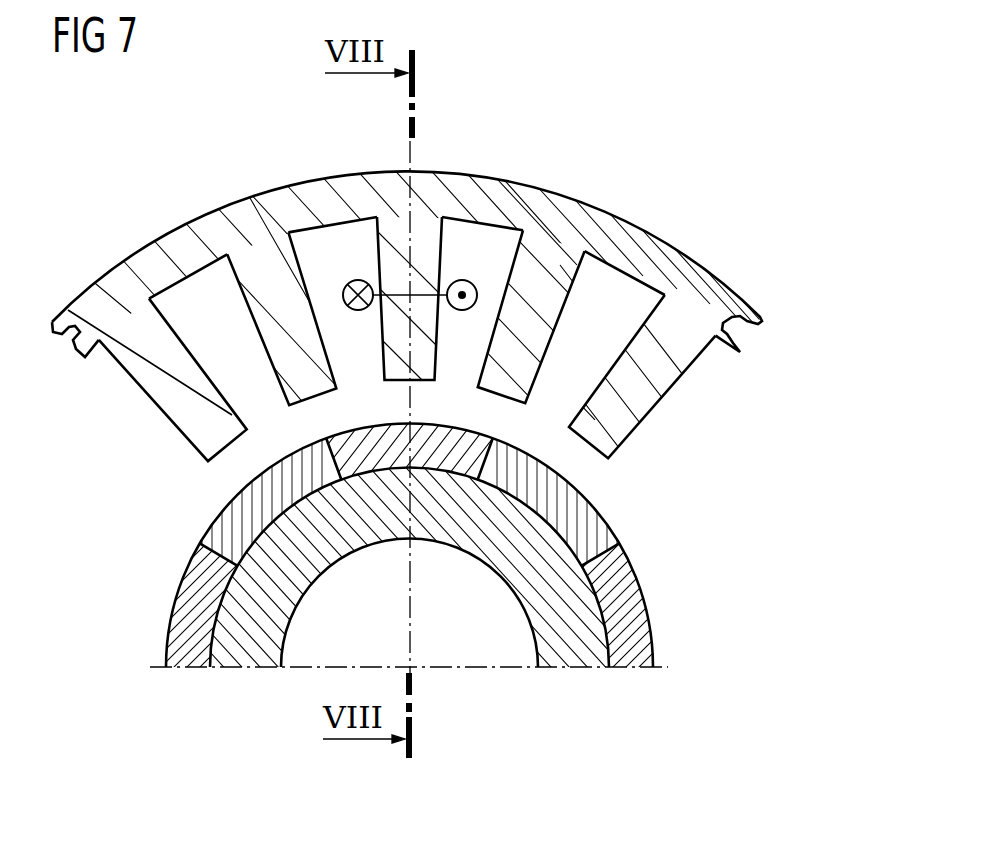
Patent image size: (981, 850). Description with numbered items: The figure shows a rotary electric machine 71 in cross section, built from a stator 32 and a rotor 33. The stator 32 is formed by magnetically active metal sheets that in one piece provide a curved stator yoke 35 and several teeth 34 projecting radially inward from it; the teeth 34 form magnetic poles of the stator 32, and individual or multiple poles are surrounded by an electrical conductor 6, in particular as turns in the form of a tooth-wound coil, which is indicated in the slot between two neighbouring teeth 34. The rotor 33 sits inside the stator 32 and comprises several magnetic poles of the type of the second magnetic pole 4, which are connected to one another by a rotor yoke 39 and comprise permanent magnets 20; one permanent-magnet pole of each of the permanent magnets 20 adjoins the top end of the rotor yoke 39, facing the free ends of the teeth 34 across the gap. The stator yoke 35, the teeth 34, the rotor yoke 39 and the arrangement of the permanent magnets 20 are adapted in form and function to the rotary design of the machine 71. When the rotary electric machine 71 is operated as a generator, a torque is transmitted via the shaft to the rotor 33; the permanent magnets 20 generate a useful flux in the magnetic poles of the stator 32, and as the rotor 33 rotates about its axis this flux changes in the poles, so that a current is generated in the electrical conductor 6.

The second magnetic pole 4 is at (232, 698).
The electrical conductor 6 is at (358, 279).
The permanent magnets 20 is at (228, 518).
The stator 32 is at (711, 416).
The rotor 33 is at (713, 554).
The teeth 34 is at (137, 335).
The stator yoke 35 is at (533, 194).
The rotor yoke 39 is at (568, 657).
The rotary electric machine 71 is at (503, 87).